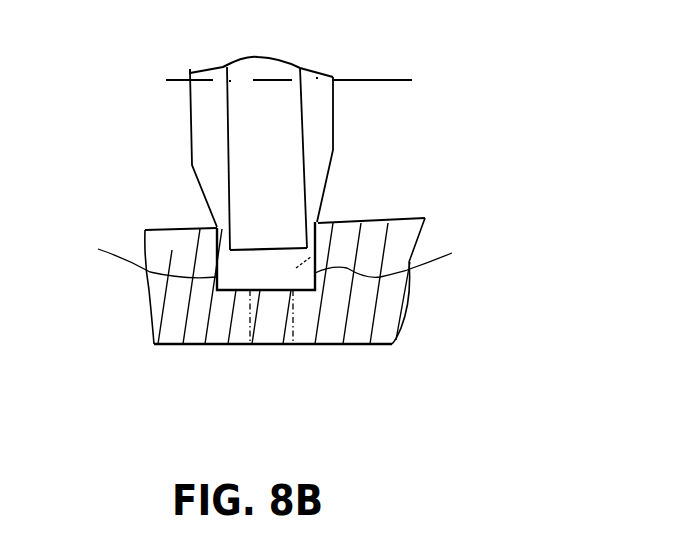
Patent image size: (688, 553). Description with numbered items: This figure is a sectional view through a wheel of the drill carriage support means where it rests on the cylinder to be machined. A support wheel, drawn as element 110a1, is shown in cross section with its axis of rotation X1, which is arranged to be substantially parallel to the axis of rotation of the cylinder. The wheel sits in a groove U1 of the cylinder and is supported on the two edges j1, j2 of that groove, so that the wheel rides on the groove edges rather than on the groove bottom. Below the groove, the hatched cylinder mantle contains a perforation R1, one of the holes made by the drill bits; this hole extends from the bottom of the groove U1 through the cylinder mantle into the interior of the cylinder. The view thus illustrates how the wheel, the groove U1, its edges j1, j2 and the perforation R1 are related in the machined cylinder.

The axis of rotation of the wheels X1 is at (383, 68).
The protruding portion 110a1 is at (190, 112).
The groove U1 is at (340, 204).
The perforation R1 is at (232, 350).
The edge of the groove j1 is at (147, 253).
The edge of the groove j2 is at (385, 253).